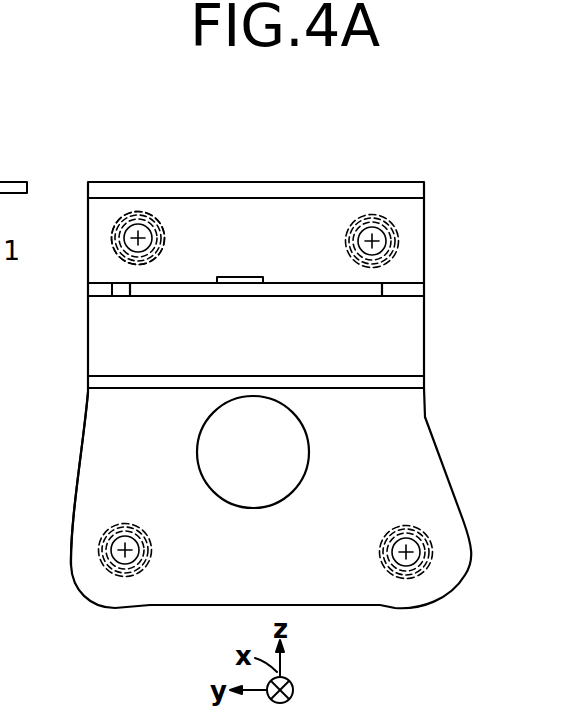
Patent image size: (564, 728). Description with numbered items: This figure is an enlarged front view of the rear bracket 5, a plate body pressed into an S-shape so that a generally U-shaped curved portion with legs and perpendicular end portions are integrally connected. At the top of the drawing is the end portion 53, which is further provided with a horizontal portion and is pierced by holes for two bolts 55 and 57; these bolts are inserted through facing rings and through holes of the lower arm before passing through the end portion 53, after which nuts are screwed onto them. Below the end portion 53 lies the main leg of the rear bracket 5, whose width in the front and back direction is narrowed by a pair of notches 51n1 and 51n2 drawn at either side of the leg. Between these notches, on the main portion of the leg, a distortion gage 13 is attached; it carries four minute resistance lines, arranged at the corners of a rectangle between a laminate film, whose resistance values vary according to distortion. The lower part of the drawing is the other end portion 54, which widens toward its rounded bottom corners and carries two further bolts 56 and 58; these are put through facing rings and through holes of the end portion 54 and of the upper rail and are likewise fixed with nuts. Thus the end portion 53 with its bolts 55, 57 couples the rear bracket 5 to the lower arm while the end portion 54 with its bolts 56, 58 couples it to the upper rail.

The rear bracket 5 is at (167, 182).
The distortion gage 13 is at (240, 278).
The end portion 53 is at (100, 230).
The bolt 55 is at (401, 240).
The bolt 56 is at (420, 528).
The bolt 57 is at (113, 247).
The bolt 58 is at (103, 562).
The end portion 54 is at (100, 480).
The notch 51n1 is at (395, 292).
The notch 51n2 is at (112, 290).